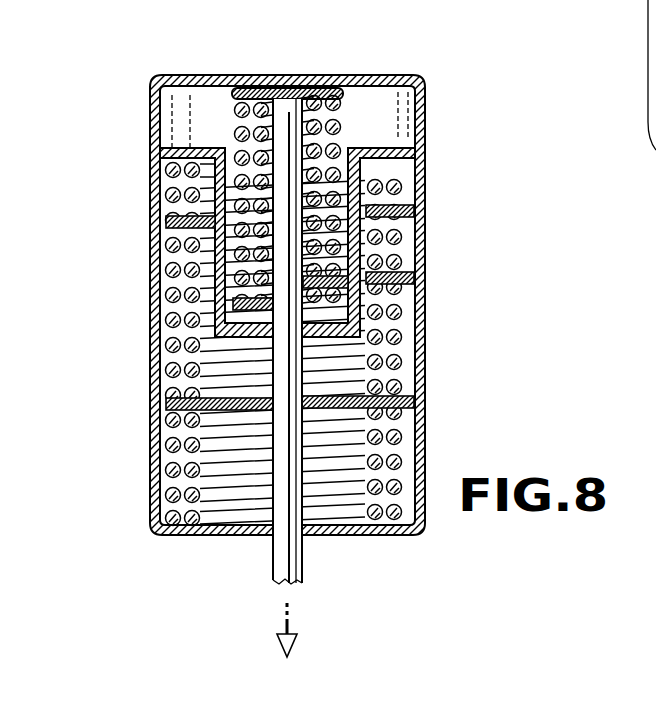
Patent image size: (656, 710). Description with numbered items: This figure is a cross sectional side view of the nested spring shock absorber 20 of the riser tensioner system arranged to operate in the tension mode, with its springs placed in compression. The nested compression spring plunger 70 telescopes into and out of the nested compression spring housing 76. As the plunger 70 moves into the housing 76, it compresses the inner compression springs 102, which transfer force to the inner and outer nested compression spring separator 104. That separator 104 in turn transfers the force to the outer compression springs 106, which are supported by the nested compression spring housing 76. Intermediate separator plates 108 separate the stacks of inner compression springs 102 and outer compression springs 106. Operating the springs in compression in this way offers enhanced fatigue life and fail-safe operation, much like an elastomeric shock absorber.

The nested spring shock absorber 20 is at (288, 337).
The nested compression spring plunger 70 is at (318, 556).
The nested compression spring housing 76 is at (420, 477).
The inner compression springs 102 is at (234, 135).
The inner and outer nested compression spring separator 104 is at (153, 162).
The outer compression springs 106 is at (153, 226).
The intermediate separator plates 108 is at (392, 204).